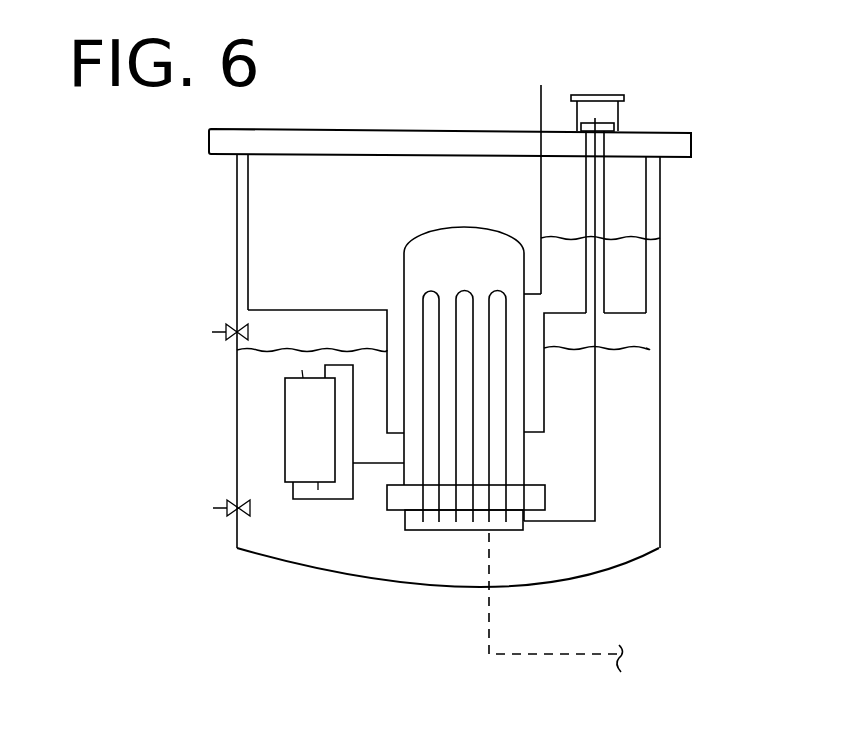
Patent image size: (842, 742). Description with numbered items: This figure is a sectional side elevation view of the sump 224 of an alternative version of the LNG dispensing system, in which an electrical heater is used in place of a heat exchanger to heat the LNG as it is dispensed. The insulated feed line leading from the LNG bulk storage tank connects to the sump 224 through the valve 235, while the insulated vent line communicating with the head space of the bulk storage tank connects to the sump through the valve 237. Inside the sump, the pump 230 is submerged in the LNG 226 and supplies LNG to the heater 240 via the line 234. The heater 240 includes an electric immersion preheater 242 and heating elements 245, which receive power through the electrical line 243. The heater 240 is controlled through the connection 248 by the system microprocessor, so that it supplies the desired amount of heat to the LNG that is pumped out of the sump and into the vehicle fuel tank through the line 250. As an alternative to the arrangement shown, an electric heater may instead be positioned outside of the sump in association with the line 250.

The sump 224 is at (148, 222).
The LNG 226 is at (338, 538).
The pump 230 is at (285, 427).
The line 234 is at (353, 473).
The valve 235 is at (237, 519).
The valve 237 is at (237, 316).
The heater 240 is at (524, 444).
The electric immersion preheater 242 is at (515, 532).
The electrical line 243 is at (595, 386).
The heating elements 245 is at (506, 463).
The connection 248 is at (520, 655).
The line 250 is at (660, 238).